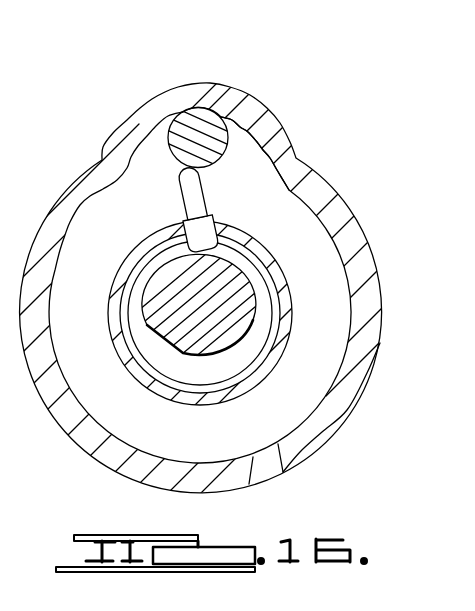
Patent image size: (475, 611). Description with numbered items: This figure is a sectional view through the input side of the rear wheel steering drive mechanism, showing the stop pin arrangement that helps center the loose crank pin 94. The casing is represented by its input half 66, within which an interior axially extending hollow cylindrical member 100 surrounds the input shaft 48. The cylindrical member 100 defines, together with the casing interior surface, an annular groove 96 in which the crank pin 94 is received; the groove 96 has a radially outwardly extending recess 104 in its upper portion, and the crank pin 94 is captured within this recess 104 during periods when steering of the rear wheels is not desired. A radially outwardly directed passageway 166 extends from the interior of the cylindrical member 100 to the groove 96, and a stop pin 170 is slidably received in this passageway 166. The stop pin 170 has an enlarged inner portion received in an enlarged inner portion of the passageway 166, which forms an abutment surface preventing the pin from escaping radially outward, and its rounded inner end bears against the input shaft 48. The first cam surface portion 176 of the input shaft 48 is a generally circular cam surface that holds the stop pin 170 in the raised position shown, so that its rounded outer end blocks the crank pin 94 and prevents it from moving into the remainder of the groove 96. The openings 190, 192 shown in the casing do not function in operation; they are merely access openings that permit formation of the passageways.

The input half 66 is at (368, 225).
The groove 96 is at (344, 320).
The recess 104 is at (254, 135).
The opening 192 is at (278, 468).
The loose crank pin 94 is at (208, 103).
The passageway 166 is at (206, 197).
The stop pin 170 is at (167, 187).
The hollow cylindrical member 100 is at (272, 359).
The opening 190 is at (254, 391).
The first cam surface portion 176 is at (266, 292).
The input shaft 48 is at (160, 354).